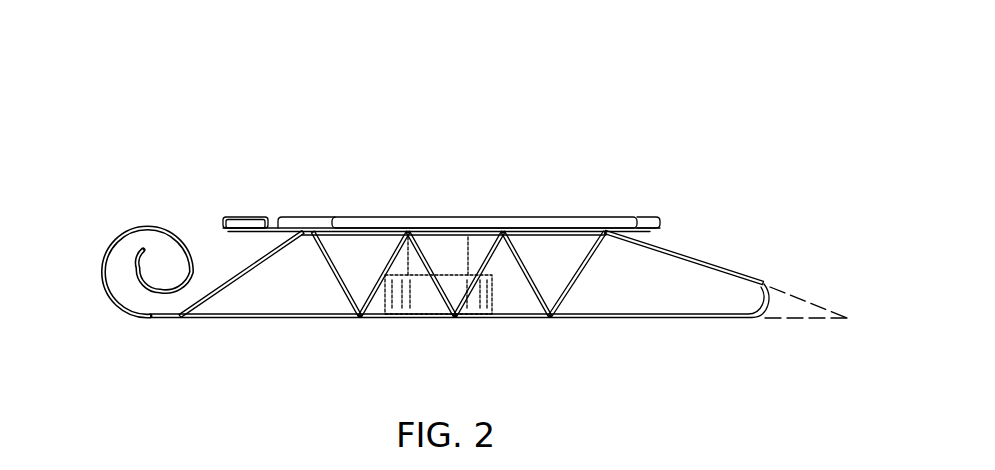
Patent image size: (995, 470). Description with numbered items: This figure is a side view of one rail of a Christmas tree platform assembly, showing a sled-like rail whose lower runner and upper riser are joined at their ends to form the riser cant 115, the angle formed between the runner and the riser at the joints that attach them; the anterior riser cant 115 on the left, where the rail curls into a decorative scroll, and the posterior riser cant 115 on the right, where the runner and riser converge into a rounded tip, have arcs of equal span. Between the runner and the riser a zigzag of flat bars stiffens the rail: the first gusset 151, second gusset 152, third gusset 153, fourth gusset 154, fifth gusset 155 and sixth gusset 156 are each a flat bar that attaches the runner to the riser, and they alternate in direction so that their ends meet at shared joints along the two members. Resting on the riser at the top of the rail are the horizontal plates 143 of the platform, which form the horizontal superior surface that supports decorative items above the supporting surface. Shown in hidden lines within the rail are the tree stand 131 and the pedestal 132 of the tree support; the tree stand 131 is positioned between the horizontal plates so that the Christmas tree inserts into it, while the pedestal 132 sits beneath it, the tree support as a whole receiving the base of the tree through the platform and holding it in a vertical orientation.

The riser cant 115 is at (213, 297).
The tree stand 131 is at (445, 247).
The pedestal 132 is at (457, 281).
The horizontal plates 143 is at (369, 216).
The first gusset 151 is at (341, 289).
The second gusset 152 is at (376, 297).
The third gusset 153 is at (445, 297).
The fourth gusset 154 is at (466, 292).
The fifth gusset 155 is at (538, 296).
The sixth gusset 156 is at (576, 280).